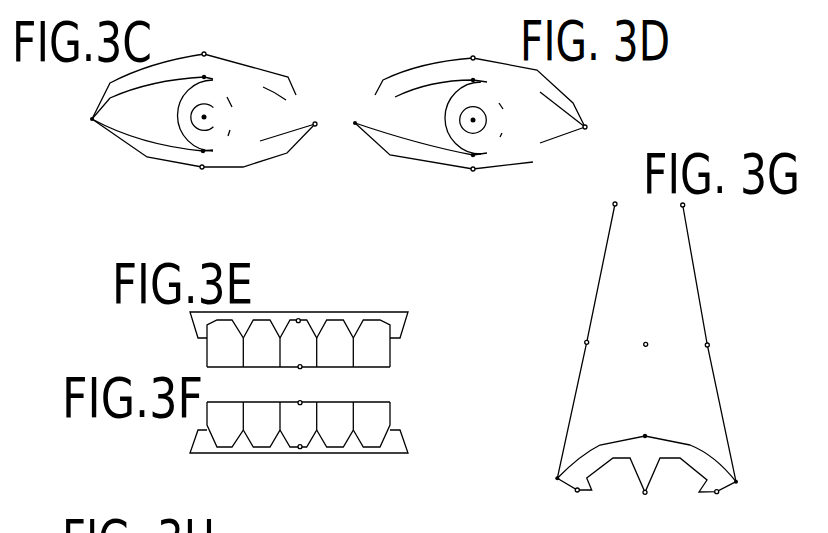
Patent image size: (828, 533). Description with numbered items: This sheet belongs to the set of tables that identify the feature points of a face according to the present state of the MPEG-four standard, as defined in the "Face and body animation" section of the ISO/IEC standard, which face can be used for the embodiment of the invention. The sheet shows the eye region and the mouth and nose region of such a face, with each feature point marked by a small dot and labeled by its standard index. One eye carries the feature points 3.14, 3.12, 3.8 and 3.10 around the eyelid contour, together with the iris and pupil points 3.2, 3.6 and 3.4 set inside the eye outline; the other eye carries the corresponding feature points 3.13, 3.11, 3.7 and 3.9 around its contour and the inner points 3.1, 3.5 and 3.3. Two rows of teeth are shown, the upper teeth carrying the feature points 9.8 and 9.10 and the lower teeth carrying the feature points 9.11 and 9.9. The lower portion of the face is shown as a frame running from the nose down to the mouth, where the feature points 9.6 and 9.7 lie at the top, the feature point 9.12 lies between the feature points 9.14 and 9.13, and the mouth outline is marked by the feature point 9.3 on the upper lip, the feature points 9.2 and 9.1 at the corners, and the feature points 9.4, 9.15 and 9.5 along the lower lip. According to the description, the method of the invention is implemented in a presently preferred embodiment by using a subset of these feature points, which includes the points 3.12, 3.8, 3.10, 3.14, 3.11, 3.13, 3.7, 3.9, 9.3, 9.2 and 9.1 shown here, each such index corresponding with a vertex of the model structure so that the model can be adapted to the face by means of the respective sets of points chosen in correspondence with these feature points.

In FIG. 3D, the upper iris landmark point 3.1 is at (495, 89).
In FIG. 3C, the upper iris landmark point 3.2 is at (222, 83).
In FIG. 3D, the lower iris landmark point 3.3 is at (495, 148).
In FIG. 3C, the lower iris landmark point 3.4 is at (221, 148).
In FIG. 3D, the pupil center point 3.5 is at (489, 120).
In FIG. 3C, the pupil center point 3.6 is at (216, 117).
In FIG. 3D, the feature point 3.7 is at (603, 127).
In FIG. 3C, the feature point 3.8 is at (312, 113).
In FIG. 3D, the feature point 3.9 is at (474, 182).
In FIG. 3C, the feature point 3.10 is at (207, 178).
In FIG. 3D, the feature point 3.11 is at (362, 112).
In FIG. 3C, the feature point 3.12 is at (73, 119).
In FIG. 3D, the feature point 3.13 is at (472, 46).
In FIG. 3C, the feature point 3.14 is at (205, 42).
In FIG. 3G, the feature point 9.1 is at (752, 482).
In FIG. 3G, the feature point 9.2 is at (542, 477).
In FIG. 3G, the feature point 9.3 is at (644, 423).
In FIG. 3G, the lower lip left point 9.4 is at (573, 504).
In FIG. 3G, the lower lip right point 9.5 is at (721, 506).
In FIG. 3G, the left nostril base point 9.6 is at (600, 203).
In FIG. 3G, the right nostril base point 9.7 is at (702, 207).
In FIG. 3E, the upper teeth top center point 9.8 is at (298, 306).
In FIG. 3F, the lower teeth bottom center point 9.9 is at (298, 463).
In FIG. 3E, the upper teeth edge center point 9.10 is at (280, 377).
In FIG. 3F, the lower teeth edge center point 9.11 is at (320, 395).
In FIG. 3G, the nose tip point 9.12 is at (645, 331).
In FIG. 3G, the right cheek point 9.13 is at (689, 358).
In FIG. 3G, the left cheek point 9.14 is at (603, 355).
In FIG. 3G, the lower lip center point 9.15 is at (647, 505).